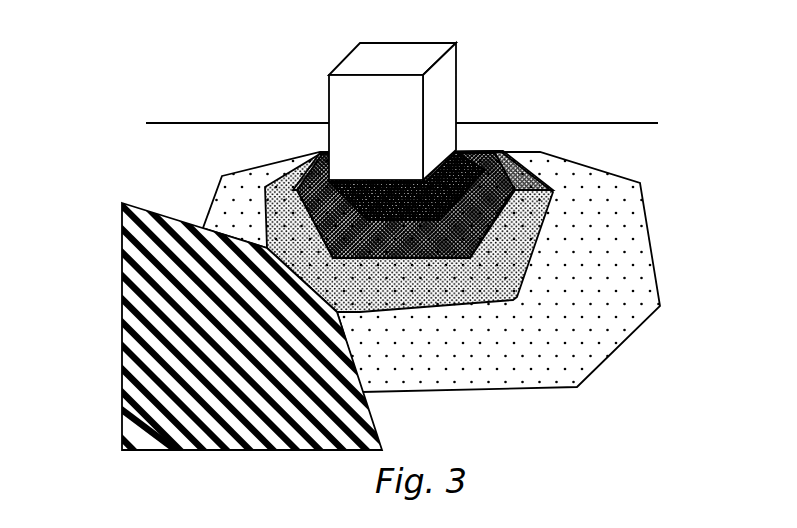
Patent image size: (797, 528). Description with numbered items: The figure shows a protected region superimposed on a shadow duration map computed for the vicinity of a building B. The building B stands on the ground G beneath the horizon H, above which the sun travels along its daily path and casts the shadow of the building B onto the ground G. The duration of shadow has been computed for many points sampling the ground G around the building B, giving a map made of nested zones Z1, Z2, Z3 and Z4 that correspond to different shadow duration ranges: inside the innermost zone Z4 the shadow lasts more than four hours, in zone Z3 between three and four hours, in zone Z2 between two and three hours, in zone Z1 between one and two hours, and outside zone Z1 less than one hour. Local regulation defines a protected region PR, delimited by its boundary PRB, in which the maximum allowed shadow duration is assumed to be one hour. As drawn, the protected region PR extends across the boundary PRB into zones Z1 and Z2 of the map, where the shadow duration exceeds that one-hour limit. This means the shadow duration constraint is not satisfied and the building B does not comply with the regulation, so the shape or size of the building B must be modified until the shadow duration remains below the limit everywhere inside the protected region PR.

The building B is at (458, 63).
The horizon H is at (640, 122).
The ground G is at (177, 155).
The zone Z1 is at (627, 235).
The zone Z2 is at (548, 194).
The zone Z3 is at (517, 163).
The zone Z4 is at (467, 150).
The protected region PR is at (157, 247).
The boundary PRB is at (378, 440).